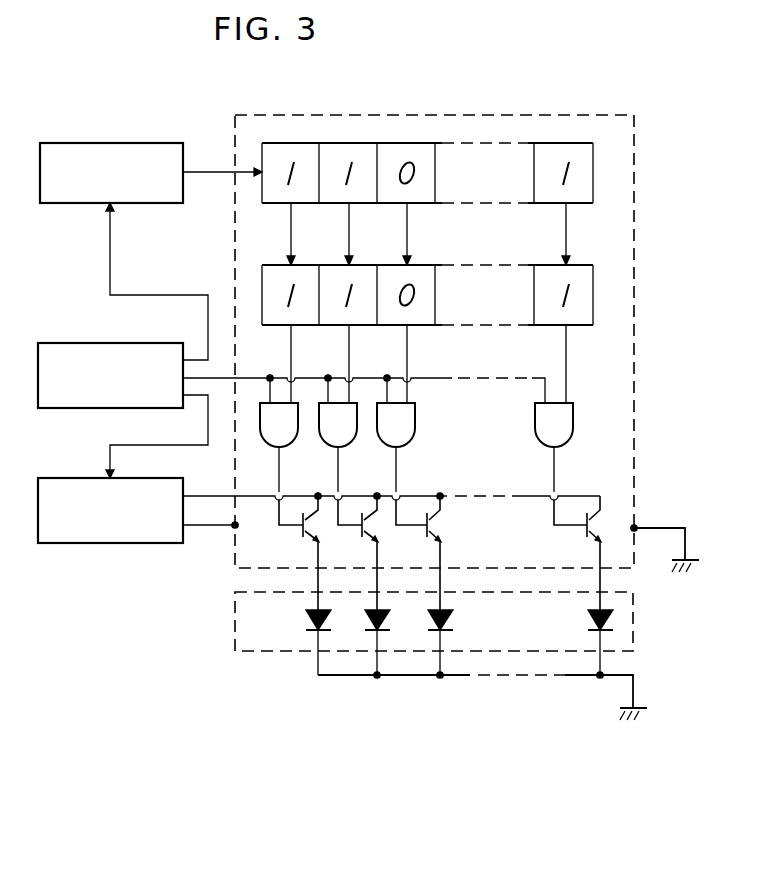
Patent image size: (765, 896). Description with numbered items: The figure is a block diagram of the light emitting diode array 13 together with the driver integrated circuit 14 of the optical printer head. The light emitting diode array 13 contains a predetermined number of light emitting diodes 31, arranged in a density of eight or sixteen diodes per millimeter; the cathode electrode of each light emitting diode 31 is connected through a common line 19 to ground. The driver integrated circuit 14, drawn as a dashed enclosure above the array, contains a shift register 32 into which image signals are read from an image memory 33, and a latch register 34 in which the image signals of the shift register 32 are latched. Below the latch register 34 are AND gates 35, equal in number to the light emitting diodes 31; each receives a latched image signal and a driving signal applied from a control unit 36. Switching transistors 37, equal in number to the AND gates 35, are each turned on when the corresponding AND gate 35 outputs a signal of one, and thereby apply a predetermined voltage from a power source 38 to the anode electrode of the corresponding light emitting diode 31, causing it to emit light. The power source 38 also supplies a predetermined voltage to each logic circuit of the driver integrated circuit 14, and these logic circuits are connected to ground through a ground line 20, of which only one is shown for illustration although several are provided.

The light emitting diode array 13 is at (633, 617).
The driver integrated circuit 14 is at (381, 113).
The common line 19 is at (347, 677).
The ground line 20 is at (662, 527).
The light emitting diodes 31 is at (453, 615).
The shift register 32 is at (584, 206).
The image memory 33 is at (123, 143).
The latch register 34 is at (585, 328).
The AND gates 35 is at (573, 420).
The control unit 36 is at (70, 409).
The switching transistors 37 is at (441, 521).
The power source 38 is at (136, 544).